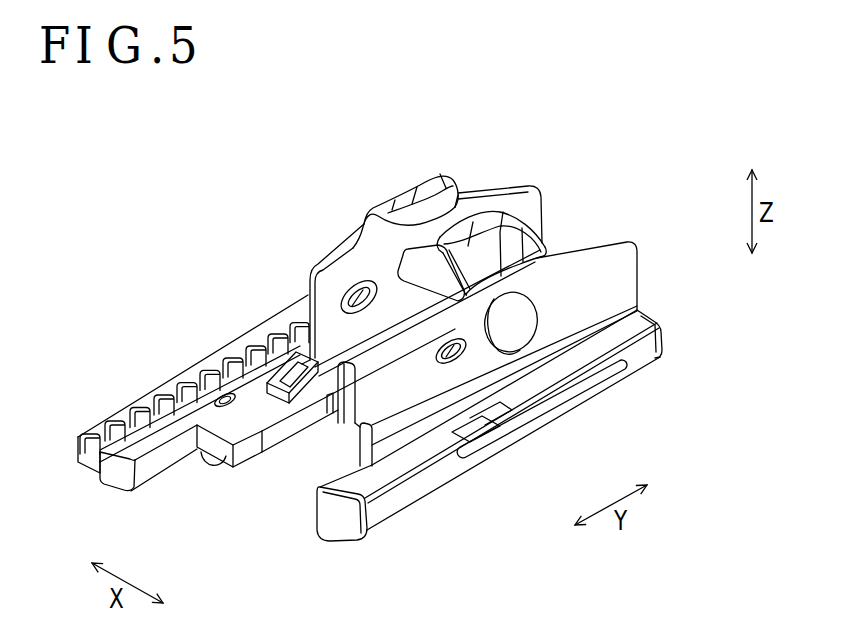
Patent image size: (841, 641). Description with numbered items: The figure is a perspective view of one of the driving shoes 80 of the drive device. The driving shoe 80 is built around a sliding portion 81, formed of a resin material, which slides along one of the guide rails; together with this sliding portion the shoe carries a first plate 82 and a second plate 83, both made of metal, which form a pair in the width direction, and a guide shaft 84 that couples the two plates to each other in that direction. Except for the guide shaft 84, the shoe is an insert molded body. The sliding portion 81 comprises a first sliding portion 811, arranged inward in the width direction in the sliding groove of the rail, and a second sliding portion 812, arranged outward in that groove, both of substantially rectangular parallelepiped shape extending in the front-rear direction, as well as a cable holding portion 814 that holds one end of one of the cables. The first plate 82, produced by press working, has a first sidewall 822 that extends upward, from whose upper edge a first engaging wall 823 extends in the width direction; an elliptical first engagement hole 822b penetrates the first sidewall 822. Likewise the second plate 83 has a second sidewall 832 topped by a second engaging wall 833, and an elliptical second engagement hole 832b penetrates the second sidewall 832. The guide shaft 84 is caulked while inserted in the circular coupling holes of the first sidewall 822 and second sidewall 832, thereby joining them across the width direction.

The driving shoe 80 is at (141, 173).
The sliding portion 81 is at (247, 330).
The first sliding portion 811 is at (383, 512).
The second sliding portion 812 is at (250, 460).
The cable holding portion 814 is at (141, 402).
The first plate 82 is at (629, 240).
The first sidewall 822 is at (625, 273).
The first engagement hole 822b is at (443, 357).
The first engaging wall 823 is at (501, 216).
The second plate 83 is at (530, 183).
The second sidewall 832 is at (535, 208).
The second engagement hole 832b is at (351, 287).
The second engaging wall 833 is at (447, 187).
The guide shaft 84 is at (524, 314).